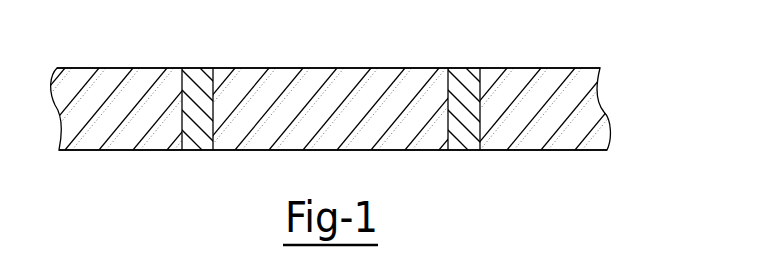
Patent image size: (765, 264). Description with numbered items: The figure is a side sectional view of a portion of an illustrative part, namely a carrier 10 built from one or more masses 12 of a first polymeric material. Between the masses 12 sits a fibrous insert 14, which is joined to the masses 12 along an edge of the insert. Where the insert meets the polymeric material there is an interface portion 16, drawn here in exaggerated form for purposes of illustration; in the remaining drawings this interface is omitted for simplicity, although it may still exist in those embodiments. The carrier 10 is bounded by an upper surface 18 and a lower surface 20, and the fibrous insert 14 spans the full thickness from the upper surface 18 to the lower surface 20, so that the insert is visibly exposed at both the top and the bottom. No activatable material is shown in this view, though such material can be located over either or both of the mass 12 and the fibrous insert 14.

The carrier 10 is at (587, 163).
The mass 12 is at (100, 123).
The fibrous insert 14 is at (398, 68).
The interface portion 16 is at (195, 68).
The upper surface 18 is at (74, 68).
The lower surface 20 is at (147, 150).